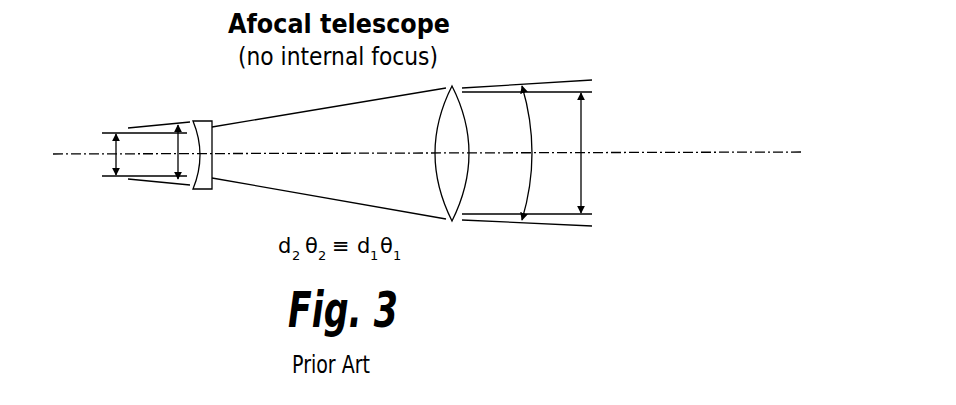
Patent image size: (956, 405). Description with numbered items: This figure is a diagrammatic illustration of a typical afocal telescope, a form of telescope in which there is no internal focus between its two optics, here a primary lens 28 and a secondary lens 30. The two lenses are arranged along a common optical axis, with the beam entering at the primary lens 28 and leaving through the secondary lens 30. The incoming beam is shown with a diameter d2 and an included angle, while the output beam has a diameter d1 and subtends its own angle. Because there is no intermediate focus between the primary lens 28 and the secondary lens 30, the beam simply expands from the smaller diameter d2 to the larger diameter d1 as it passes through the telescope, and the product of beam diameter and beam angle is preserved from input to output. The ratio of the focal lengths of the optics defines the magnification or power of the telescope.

The primary lens 28 is at (200, 114).
The secondary lens 30 is at (449, 86).
The diameter of the incoming beam d2 is at (112, 160).
The diameter of the output beam d1 is at (582, 148).